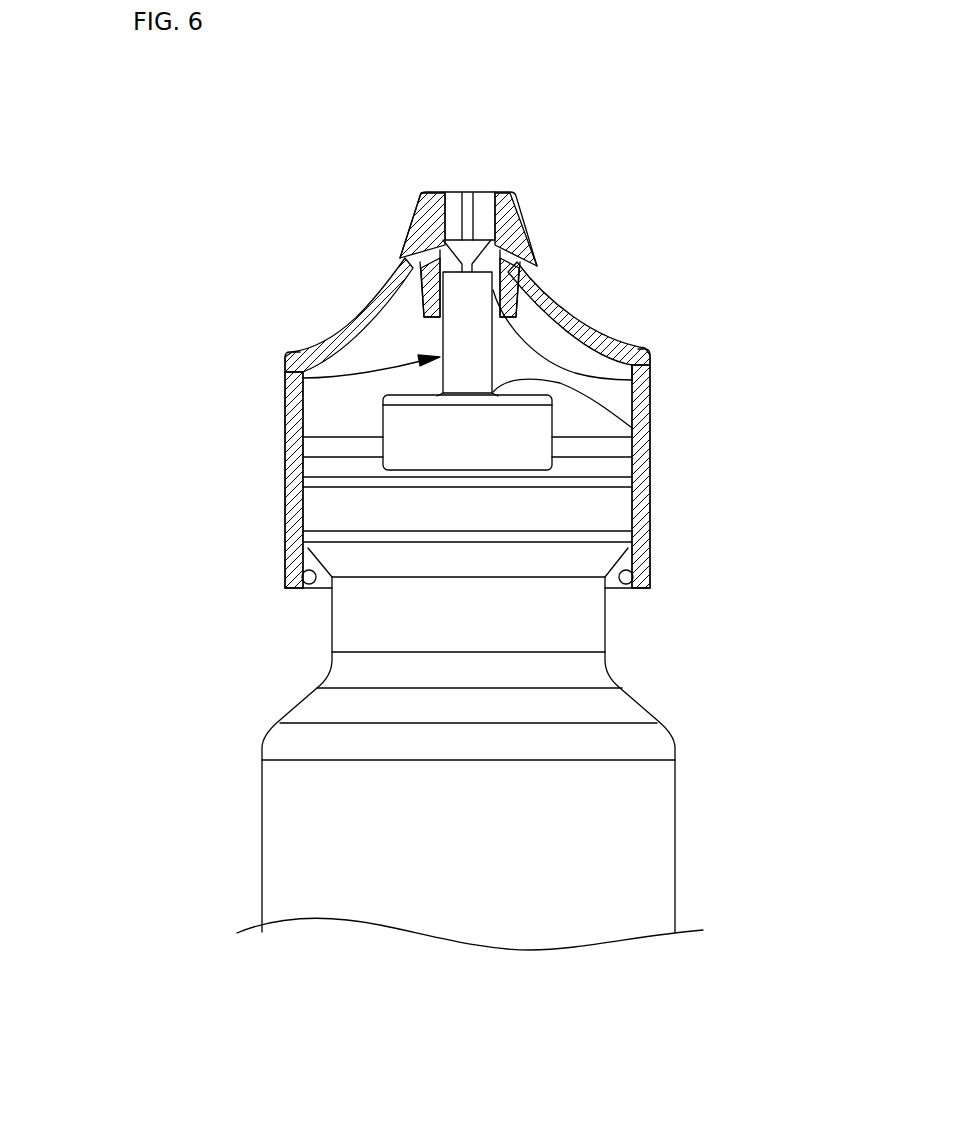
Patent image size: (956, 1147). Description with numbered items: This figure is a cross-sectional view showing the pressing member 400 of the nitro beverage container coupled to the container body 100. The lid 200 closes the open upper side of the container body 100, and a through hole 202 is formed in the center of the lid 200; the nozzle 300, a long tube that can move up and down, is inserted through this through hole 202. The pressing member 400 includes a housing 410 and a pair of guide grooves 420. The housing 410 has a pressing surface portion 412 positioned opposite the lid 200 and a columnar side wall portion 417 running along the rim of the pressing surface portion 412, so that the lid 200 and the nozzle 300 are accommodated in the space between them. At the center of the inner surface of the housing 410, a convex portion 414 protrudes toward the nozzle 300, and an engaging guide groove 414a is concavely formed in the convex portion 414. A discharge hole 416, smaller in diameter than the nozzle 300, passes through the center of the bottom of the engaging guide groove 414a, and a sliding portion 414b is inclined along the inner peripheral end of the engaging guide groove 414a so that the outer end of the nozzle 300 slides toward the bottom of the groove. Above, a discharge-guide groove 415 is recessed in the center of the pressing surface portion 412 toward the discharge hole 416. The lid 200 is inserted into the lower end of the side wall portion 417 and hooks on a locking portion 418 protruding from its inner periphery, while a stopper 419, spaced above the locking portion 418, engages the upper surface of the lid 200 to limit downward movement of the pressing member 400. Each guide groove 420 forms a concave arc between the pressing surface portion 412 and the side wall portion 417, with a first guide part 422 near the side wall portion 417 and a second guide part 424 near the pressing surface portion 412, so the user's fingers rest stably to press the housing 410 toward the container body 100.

The container body 100 is at (240, 793).
The lid 200 is at (655, 515).
The through hole 202 is at (633, 428).
The nozzle 300 is at (338, 376).
The pressing member 400 is at (190, 268).
The housing 410 is at (258, 538).
The pressing surface portion 412 is at (503, 193).
The convex portion 414 is at (425, 292).
The engaging guide groove 414a is at (418, 200).
The sliding portion 414b is at (636, 368).
The discharge-guide groove 415 is at (450, 192).
The discharge hole 416 is at (469, 192).
The side wall portion 417 is at (285, 410).
The locking portion 418 is at (302, 588).
The stopper 419 is at (285, 474).
The guide groove 420 is at (342, 320).
The first guide part 422 is at (620, 350).
The second guide part 424 is at (520, 268).